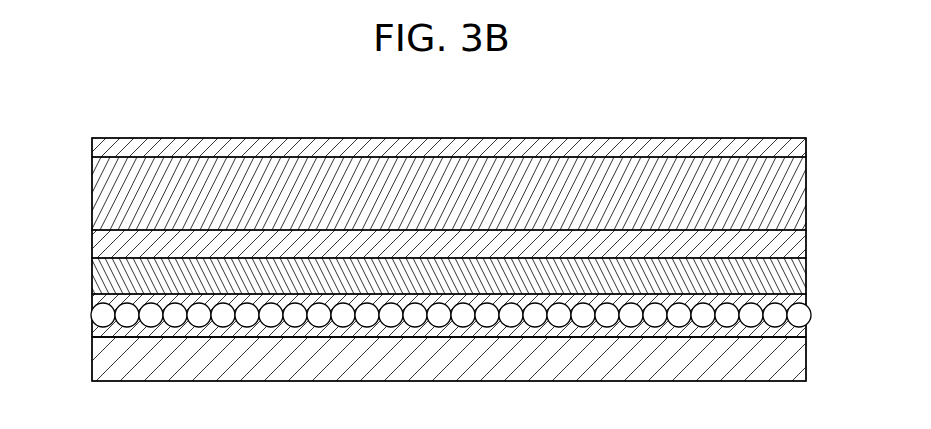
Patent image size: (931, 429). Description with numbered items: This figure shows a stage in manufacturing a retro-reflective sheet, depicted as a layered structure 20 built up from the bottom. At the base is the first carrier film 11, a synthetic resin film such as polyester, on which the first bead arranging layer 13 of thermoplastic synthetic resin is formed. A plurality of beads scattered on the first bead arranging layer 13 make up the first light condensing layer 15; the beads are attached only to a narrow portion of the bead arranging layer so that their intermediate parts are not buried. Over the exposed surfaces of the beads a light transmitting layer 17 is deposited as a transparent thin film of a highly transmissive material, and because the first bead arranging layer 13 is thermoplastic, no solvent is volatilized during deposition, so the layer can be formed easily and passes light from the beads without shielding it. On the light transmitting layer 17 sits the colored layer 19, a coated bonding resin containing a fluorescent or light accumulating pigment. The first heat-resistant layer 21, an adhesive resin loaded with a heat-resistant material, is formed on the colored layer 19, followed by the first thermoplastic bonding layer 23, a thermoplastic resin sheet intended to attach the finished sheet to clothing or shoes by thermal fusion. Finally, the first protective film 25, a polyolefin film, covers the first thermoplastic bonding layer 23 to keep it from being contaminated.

The display device stack 20 is at (816, 129).
The first protective film 25 is at (192, 150).
The first thermoplastic bonding layer 23 is at (806, 192).
The first heat-resistant layer 21 is at (92, 242).
The colored layer 19 is at (92, 260).
The light transmitting layer 17 is at (92, 296).
The first light condensing layer 15 is at (802, 311).
The first bead arranging layer 13 is at (806, 337).
The first carrier film 11 is at (795, 375).